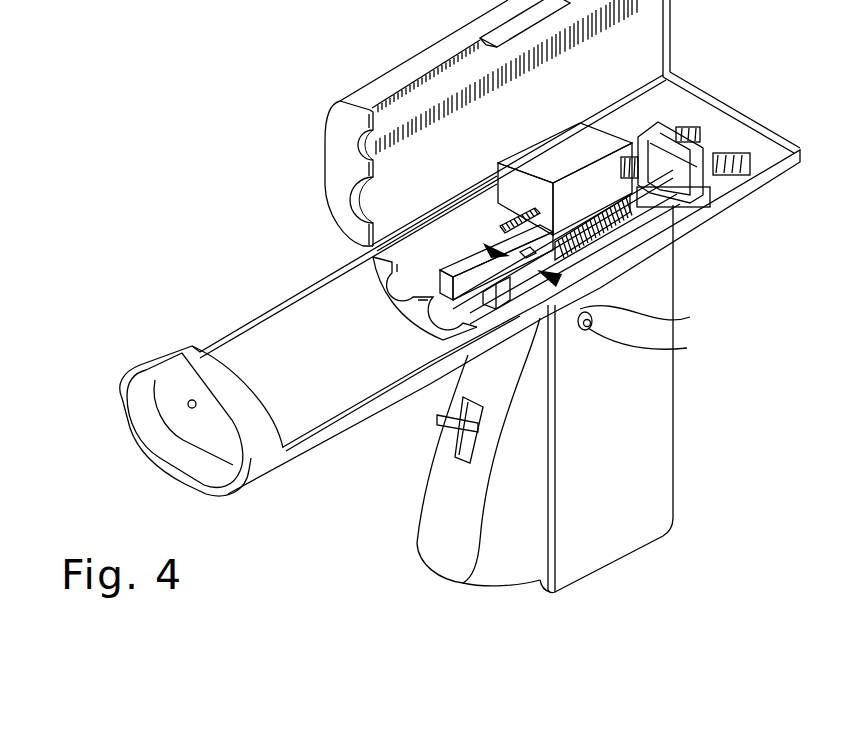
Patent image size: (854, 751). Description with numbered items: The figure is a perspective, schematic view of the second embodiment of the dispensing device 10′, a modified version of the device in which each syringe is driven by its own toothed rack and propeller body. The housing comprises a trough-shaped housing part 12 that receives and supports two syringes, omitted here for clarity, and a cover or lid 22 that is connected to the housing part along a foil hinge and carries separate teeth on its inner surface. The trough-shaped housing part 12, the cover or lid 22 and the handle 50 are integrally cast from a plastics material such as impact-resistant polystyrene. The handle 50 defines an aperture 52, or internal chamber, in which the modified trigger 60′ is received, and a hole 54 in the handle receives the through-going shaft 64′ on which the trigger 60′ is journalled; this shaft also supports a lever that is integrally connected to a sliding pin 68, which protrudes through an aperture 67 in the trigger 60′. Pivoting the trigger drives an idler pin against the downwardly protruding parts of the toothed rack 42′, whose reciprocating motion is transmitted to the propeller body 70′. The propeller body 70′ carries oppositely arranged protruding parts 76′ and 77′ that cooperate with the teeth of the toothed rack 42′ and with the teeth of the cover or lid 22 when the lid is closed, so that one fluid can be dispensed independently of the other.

The dispensing device 10′ is at (190, 218).
The trough-shaped housing part 12 is at (305, 417).
The cover or lid 22 is at (633, 50).
The toothed rack 42′ is at (483, 243).
The handle 50 is at (676, 485).
The aperture 52 is at (546, 576).
The hole 54 is at (652, 315).
The trigger 60′ is at (437, 520).
The through-going shaft 64′ is at (660, 345).
The aperture 67 is at (455, 456).
The sliding pin 68 is at (437, 420).
The propeller body 70′ is at (600, 138).
The protruding part 76′ is at (512, 219).
The protruding part 77′ is at (531, 164).